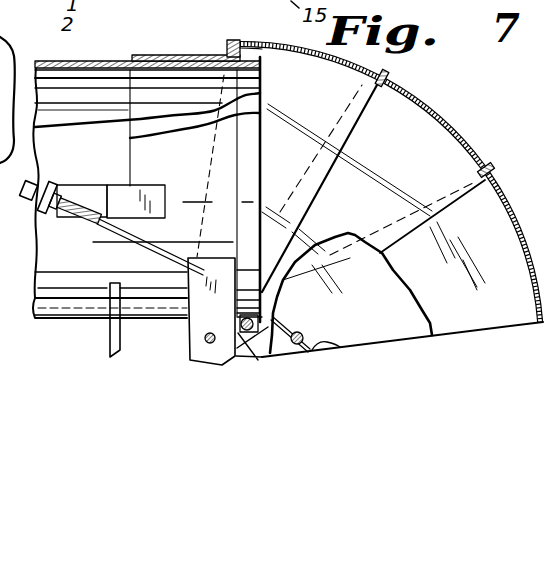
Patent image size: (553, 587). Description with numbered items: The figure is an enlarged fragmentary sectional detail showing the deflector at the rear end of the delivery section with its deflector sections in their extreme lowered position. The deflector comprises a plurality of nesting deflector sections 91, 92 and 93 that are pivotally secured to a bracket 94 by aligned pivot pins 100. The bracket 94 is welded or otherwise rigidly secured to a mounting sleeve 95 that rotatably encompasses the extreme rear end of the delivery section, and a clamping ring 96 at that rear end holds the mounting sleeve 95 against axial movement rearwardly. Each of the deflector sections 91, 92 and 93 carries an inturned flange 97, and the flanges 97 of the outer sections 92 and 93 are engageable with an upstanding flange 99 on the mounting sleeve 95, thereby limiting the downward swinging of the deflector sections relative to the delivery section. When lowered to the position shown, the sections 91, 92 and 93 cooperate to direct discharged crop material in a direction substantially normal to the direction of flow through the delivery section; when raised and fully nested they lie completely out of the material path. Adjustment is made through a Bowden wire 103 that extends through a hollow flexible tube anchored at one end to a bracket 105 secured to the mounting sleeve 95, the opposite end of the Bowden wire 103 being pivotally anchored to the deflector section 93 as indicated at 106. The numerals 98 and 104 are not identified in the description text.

The deflector section 91 is at (311, 50).
The deflector section 92 is at (437, 119).
The deflector section 93 is at (528, 211).
The bracket 94 is at (195, 350).
The mounting sleeve 95 is at (160, 55).
The clamping ring 96 is at (248, 147).
The inturned flange 97 is at (227, 43).
The radial arm 98 is at (383, 84).
The upstanding flange 99 is at (240, 52).
The pivot pin 100 is at (204, 340).
The Bowden wire 103 is at (340, 359).
The adjusting bolt 104 is at (37, 186).
The bracket 105 is at (58, 218).
The pivotal anchorage of Bowden wire 106 is at (302, 335).